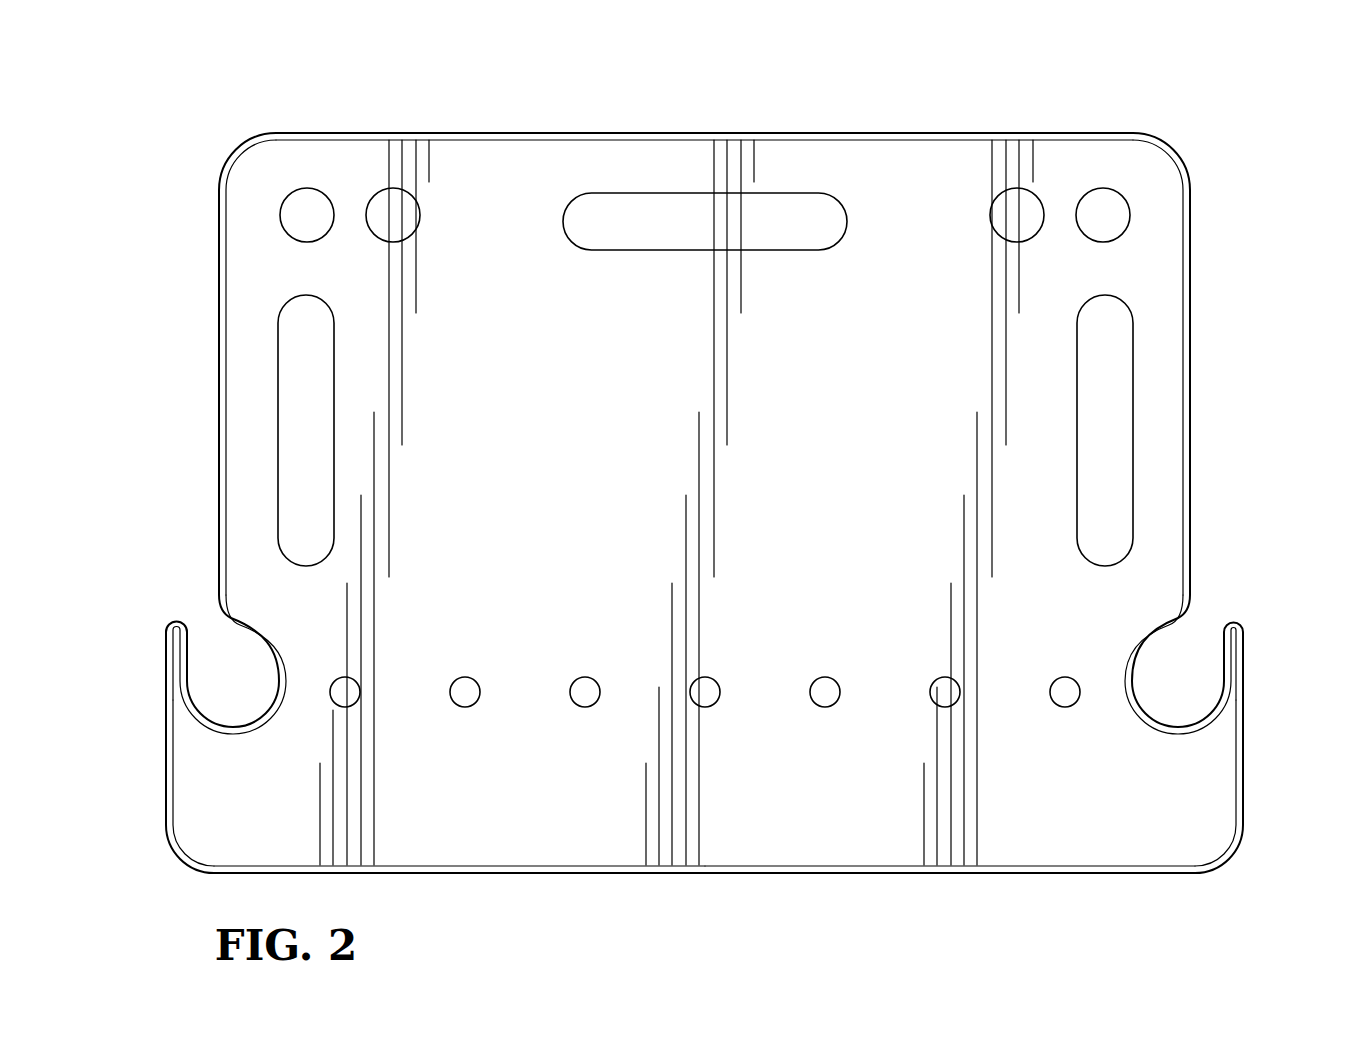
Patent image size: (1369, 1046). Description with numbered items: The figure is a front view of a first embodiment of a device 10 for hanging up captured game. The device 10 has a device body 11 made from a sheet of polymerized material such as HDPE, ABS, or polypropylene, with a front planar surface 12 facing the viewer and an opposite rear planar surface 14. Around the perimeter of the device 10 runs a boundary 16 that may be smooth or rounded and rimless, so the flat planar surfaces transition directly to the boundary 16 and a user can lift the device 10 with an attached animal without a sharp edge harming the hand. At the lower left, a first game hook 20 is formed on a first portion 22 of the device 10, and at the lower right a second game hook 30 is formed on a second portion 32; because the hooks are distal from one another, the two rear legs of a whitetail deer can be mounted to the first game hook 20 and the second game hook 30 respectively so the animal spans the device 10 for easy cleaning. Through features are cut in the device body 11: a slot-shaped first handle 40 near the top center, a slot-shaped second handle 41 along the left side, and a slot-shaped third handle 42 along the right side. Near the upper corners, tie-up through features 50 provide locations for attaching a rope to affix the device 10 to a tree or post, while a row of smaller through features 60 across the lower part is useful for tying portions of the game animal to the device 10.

The device 10 is at (1170, 143).
The device body 11 is at (258, 260).
The front planar surface 12 is at (1165, 262).
The rear planar surface 14 is at (1220, 326).
The boundary 16 is at (287, 132).
The first game hook 20 is at (170, 618).
The first portion 22 is at (210, 790).
The second game hook 30 is at (1238, 620).
The second portion 32 is at (1195, 782).
The first handle 40 is at (647, 193).
The second handle 41 is at (278, 385).
The third handle 42 is at (1135, 442).
The tie-up through features 50 is at (323, 192).
The through features 60 is at (350, 706).